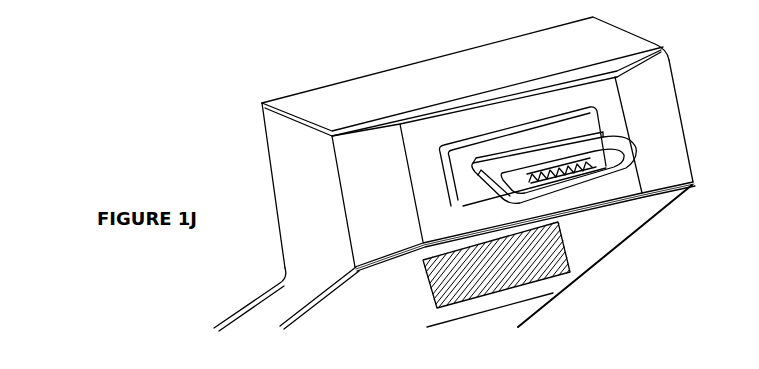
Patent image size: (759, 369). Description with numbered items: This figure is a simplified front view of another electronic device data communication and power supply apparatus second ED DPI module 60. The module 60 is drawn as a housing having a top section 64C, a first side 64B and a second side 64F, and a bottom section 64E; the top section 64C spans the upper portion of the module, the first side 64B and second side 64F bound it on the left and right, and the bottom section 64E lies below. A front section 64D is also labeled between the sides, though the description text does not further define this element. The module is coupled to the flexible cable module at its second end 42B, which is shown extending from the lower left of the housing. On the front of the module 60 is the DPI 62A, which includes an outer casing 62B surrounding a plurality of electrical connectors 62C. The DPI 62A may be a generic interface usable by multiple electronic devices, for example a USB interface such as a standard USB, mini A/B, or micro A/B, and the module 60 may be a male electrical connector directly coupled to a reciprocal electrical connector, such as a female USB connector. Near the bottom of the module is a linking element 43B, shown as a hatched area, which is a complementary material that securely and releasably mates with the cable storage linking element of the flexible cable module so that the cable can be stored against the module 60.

The second ED DPI module 60 is at (727, 274).
The first side 64B is at (290, 175).
The top section 64C is at (400, 80).
The front wall of housing 64D is at (585, 95).
The bottom section 64E is at (358, 295).
The second side 64F is at (677, 93).
The cable module second end 42B is at (227, 317).
The linking element 43B is at (568, 248).
The DPI 62A is at (491, 192).
The outer casing 62B is at (633, 153).
The electrical connectors 62C is at (573, 176).